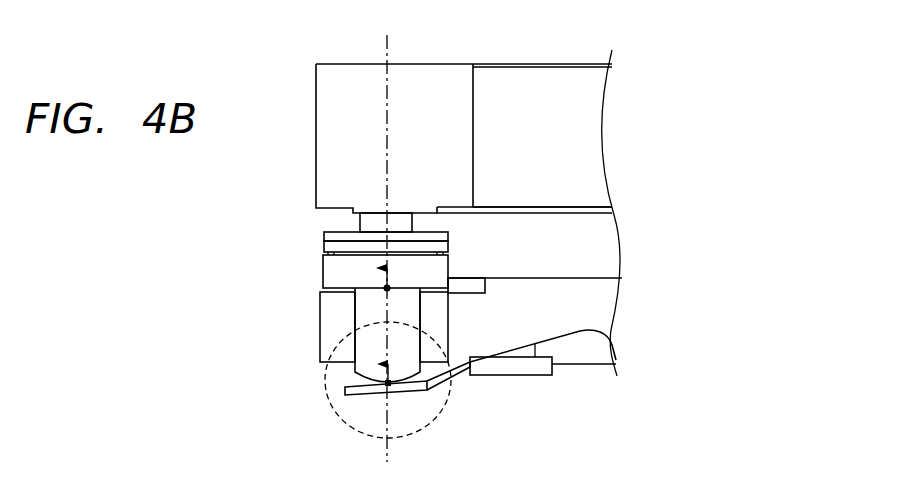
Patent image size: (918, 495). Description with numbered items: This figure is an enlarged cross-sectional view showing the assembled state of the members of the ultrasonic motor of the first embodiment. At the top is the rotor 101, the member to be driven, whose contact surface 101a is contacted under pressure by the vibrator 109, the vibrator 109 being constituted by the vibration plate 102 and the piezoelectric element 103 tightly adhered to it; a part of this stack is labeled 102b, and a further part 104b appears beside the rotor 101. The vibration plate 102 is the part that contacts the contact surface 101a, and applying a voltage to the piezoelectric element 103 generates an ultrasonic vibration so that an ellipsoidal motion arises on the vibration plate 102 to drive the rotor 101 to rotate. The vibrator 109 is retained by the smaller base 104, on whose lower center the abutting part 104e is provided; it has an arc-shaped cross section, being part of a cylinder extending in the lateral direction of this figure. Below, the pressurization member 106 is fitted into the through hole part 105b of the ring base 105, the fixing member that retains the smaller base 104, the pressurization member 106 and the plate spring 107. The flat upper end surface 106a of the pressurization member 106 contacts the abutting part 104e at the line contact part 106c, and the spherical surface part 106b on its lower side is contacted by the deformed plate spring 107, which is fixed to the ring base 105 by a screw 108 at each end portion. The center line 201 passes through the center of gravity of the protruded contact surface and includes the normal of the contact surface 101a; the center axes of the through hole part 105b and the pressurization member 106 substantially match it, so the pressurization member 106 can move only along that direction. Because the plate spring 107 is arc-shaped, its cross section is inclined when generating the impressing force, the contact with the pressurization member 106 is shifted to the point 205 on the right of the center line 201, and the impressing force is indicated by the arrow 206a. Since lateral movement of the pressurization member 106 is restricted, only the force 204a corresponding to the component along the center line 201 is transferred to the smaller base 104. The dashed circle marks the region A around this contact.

The rotor 101 is at (355, 70).
The contact surface 101a is at (534, 213).
The vibration plate 102 is at (323, 237).
The neck portion 102b is at (350, 228).
The piezoelectric element 103 is at (323, 246).
The smaller base 104 is at (323, 268).
The support plate 104b is at (445, 214).
The abutting part 104e is at (365, 345).
The ring base 105 is at (330, 332).
The through hole part 105b is at (471, 366).
The pressurization member 106 is at (340, 364).
The upper end surface 106a is at (405, 290).
The spherical surface part 106b is at (338, 393).
The line contact part 106c is at (400, 290).
The plate spring 107 is at (342, 400).
The screw 108 is at (534, 376).
The vibrator 109 is at (247, 220).
The center line 201 is at (387, 44).
The force (vector) 204a is at (373, 230).
The point 205 is at (400, 394).
The arrow (vector) 206a is at (424, 390).
The region A is at (360, 435).